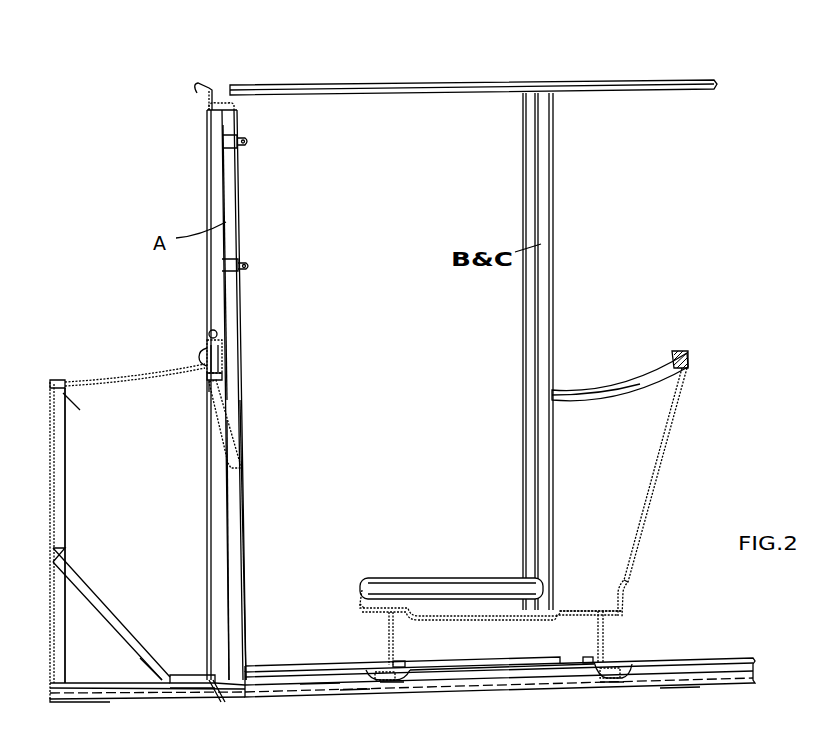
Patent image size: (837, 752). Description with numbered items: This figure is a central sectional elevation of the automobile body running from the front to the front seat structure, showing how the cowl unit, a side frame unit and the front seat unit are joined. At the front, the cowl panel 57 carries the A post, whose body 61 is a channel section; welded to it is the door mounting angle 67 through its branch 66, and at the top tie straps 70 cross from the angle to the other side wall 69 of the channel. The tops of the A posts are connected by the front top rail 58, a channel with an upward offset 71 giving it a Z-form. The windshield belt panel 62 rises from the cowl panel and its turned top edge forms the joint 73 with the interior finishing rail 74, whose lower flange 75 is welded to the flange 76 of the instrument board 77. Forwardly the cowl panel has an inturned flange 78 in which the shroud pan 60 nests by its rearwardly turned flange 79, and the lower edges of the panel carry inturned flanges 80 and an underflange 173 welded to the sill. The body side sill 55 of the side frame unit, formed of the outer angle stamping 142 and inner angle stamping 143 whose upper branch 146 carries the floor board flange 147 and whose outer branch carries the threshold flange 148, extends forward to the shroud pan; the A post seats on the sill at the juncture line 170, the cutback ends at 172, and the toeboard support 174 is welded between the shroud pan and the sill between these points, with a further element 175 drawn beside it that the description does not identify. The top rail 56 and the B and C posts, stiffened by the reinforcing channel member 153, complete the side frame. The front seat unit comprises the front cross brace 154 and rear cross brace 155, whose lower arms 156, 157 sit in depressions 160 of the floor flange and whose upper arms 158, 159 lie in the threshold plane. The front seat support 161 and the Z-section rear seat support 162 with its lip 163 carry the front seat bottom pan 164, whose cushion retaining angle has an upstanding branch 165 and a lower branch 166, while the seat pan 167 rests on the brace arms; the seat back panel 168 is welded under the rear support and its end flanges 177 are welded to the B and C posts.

The body side sill 55 is at (537, 690).
The top rail 56 is at (397, 98).
The cowl panel 57 is at (106, 535).
The front top rail 58 is at (218, 104).
The shroud pan 60 is at (56, 492).
The A post body 61 is at (221, 541).
The windshield belt panel 62 is at (204, 352).
The branch of angle 66 is at (244, 492).
The door mounting angle 67 is at (238, 184).
The side wall of channel 69 is at (207, 186).
The tie straps 70 is at (233, 139).
The upward offset 71 is at (204, 95).
The joint bead 73 is at (217, 334).
The interior finishing rail 74 is at (222, 360).
The forwardly extending flange 75 is at (223, 376).
The flange of instrument board 76 is at (213, 390).
The instrument board 77 is at (232, 430).
The inturned flange 78 is at (50, 384).
The rearwardly turned flange 79 is at (60, 442).
The inturned flanges 80 is at (135, 700).
The outer angle stamping 142 is at (185, 698).
The inner angle stamping 143 is at (682, 688).
The upper branch of inner member 146 is at (352, 690).
The floor board supporting flange 147 is at (318, 685).
The threshold flange 148 is at (310, 668).
The reinforcing channel member 153 is at (533, 152).
The front cross brace 154 is at (410, 682).
The rear cross brace 155 is at (607, 664).
The lower arm of front cross brace 156 is at (376, 672).
The lower arm of rear cross brace 157 is at (613, 672).
The upper arm of front cross brace 158 is at (405, 664).
The upper arm of rear cross brace 159 is at (585, 660).
The sill depressions 160 is at (390, 684).
The front seat support 161 is at (395, 643).
The rear seat support 162 is at (605, 637).
The upwardly extending lip 163 is at (630, 582).
The front seat bottom pan 164 is at (563, 610).
The upstanding branch 165 is at (358, 595).
The lower branch 166 is at (368, 613).
The seat pan 167 is at (488, 666).
The seat back panel 168 is at (657, 486).
The line of juncture 170 is at (222, 700).
The end of cutback 172 is at (165, 677).
The underflange of cowl panel 173 is at (108, 702).
The toeboard support 174 is at (117, 625).
The diagonal brace member 175 is at (138, 655).
The flanges of seat back panel 177 is at (554, 420).